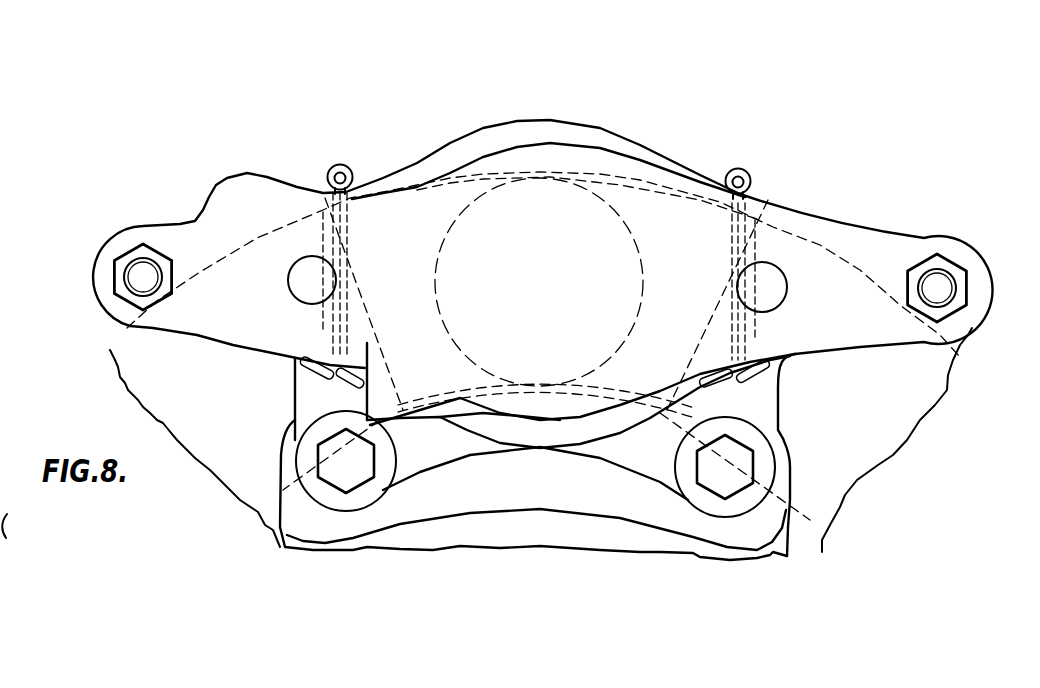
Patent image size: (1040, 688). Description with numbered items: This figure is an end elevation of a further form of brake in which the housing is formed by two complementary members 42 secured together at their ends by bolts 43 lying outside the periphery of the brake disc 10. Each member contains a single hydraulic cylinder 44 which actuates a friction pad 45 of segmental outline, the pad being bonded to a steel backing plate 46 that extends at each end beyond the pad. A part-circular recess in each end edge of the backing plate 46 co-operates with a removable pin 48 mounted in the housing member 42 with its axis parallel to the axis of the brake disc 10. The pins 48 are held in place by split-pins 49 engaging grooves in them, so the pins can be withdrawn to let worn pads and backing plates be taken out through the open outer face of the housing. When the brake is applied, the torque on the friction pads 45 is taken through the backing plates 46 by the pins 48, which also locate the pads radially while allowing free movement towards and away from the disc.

The brake disc 10 is at (200, 450).
The complementary member 42 is at (842, 228).
The bolt 43 is at (138, 282).
The hydraulic cylinder 44 is at (620, 215).
The friction pad 45 is at (600, 365).
The backing plate 46 is at (303, 358).
The pin 48 is at (305, 284).
The split-pin 49 is at (343, 165).